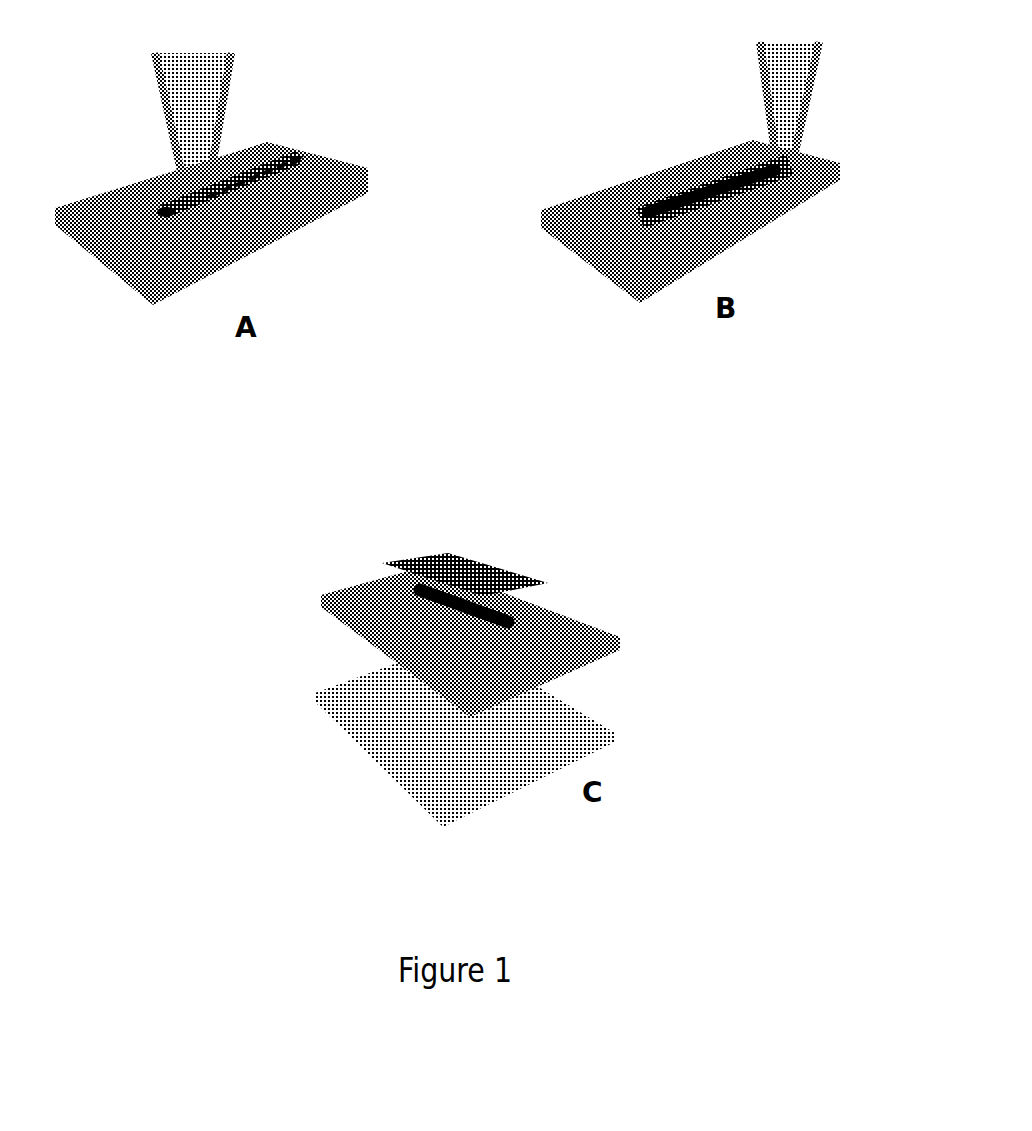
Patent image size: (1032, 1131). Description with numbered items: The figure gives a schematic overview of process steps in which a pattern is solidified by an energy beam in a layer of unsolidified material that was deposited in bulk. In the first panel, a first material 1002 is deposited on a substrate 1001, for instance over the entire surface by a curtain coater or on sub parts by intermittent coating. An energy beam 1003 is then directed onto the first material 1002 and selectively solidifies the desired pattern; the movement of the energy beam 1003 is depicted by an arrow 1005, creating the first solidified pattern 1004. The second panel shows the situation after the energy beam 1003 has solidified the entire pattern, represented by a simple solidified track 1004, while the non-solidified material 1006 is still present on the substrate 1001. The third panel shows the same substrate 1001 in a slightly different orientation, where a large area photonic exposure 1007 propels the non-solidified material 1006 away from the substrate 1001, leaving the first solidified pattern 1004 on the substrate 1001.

The substrate 1001 is at (448, 428).
The first material 1002 is at (279, 201).
The energy beam 1003 is at (543, 118).
The first solidified pattern 1004 is at (395, 384).
The arrow 1005 is at (317, 145).
The non-solidified material 1006 is at (632, 380).
The large area photonic exposure 1007 is at (455, 733).